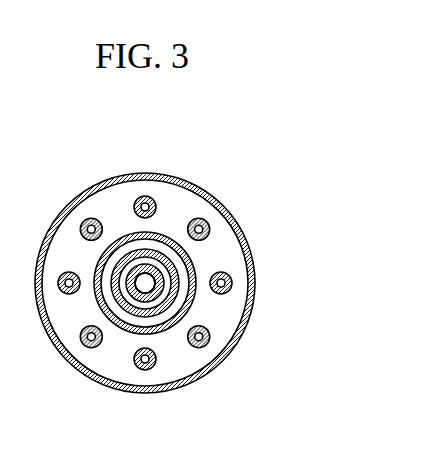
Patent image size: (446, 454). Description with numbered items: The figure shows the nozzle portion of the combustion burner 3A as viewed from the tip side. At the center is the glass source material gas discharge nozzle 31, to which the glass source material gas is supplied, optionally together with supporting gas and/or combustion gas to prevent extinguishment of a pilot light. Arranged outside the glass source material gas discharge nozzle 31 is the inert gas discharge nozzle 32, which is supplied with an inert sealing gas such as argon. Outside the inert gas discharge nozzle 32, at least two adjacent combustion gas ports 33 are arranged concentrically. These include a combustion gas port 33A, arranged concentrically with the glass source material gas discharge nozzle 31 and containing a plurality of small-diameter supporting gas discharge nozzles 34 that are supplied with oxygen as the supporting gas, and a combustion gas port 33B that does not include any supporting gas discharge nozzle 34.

The combustion burner 3A is at (243, 189).
The combustion gas ports 33 is at (336, 202).
The combustion gas port 33A is at (220, 247).
The combustion gas port 33B is at (182, 263).
The supporting gas discharge nozzle 34 is at (222, 284).
The inert gas discharge nozzle 32 is at (168, 288).
The glass source material gas discharge nozzle 31 is at (147, 284).